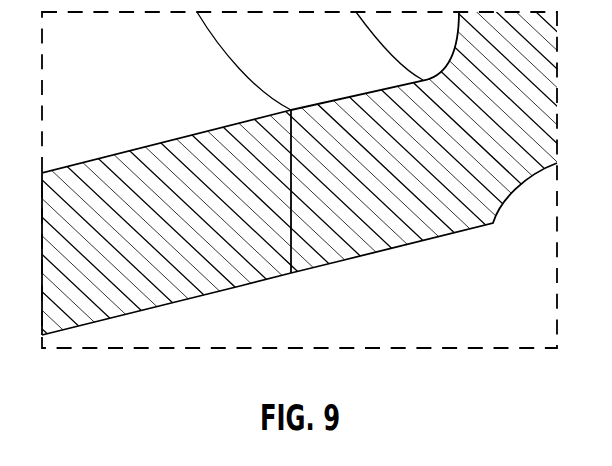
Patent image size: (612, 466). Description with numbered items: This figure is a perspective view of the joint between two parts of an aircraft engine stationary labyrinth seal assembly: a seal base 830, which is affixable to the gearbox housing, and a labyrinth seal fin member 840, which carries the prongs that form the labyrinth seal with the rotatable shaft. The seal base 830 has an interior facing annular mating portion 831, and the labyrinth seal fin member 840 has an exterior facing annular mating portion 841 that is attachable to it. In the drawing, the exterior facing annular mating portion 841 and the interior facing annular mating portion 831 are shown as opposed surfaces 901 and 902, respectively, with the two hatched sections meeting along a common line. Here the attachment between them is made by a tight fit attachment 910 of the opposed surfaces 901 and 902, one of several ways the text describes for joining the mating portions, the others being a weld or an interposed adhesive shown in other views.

The seal base 830 is at (152, 69).
The labyrinth seal fin member 840 is at (322, 62).
The interior facing annular mating portion 831 is at (138, 288).
The exterior facing annular mating portion 841 is at (398, 238).
The opposed surface 901 is at (292, 257).
The opposed surface 902 is at (288, 243).
The tight fit attachment 910 is at (291, 273).